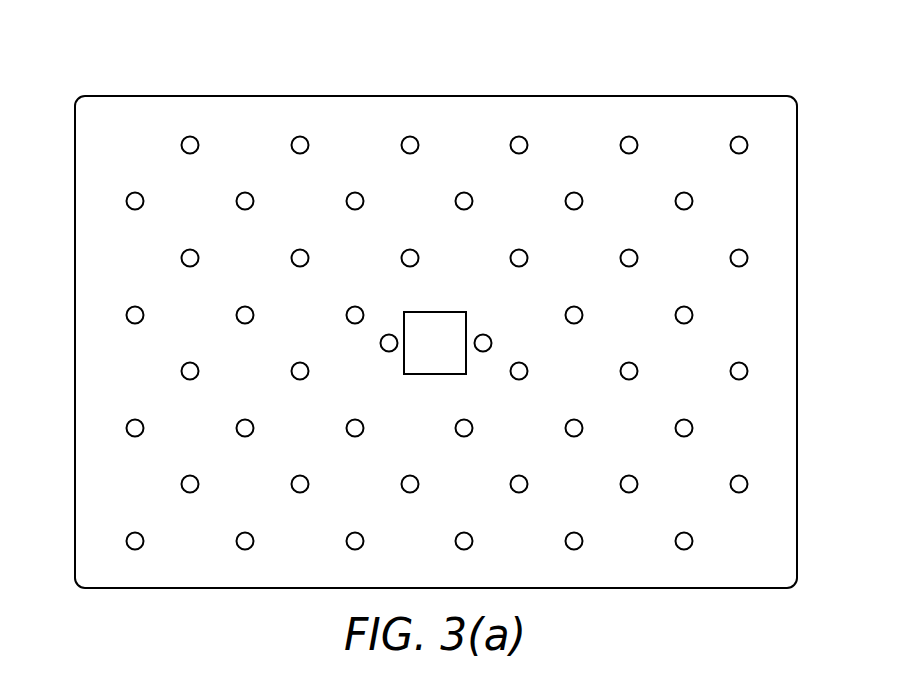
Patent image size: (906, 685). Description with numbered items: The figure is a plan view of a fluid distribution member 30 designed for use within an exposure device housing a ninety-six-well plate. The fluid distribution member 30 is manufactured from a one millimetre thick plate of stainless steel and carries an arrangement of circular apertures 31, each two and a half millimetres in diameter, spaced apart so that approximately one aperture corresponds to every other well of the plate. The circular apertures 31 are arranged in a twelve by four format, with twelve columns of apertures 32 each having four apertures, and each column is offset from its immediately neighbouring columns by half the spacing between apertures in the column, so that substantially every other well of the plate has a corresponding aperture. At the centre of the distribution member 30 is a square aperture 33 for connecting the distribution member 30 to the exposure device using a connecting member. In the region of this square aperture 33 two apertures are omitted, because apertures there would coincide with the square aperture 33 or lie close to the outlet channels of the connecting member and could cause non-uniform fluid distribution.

The fluid distribution member 30 is at (114, 112).
The circular apertures 31 is at (185, 258).
The columns of apertures 32 is at (628, 90).
The square aperture 33 is at (438, 330).